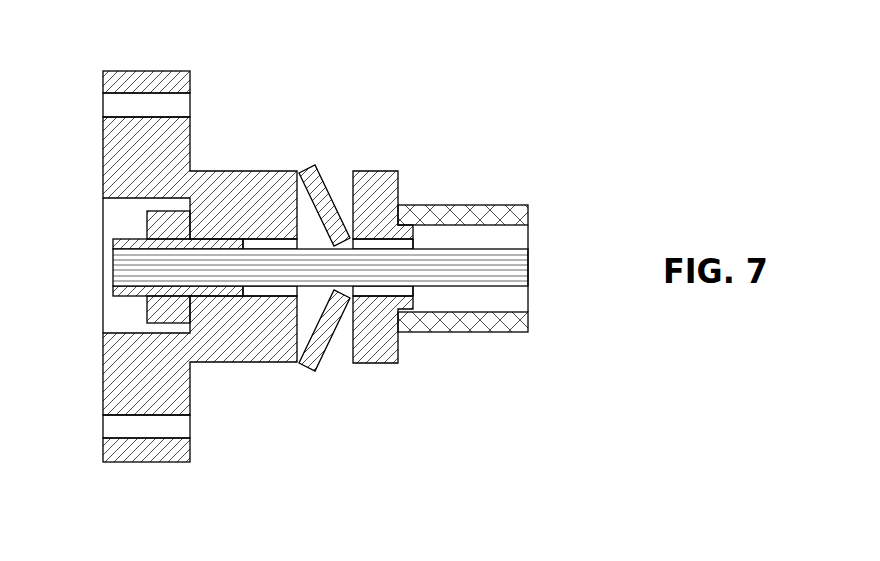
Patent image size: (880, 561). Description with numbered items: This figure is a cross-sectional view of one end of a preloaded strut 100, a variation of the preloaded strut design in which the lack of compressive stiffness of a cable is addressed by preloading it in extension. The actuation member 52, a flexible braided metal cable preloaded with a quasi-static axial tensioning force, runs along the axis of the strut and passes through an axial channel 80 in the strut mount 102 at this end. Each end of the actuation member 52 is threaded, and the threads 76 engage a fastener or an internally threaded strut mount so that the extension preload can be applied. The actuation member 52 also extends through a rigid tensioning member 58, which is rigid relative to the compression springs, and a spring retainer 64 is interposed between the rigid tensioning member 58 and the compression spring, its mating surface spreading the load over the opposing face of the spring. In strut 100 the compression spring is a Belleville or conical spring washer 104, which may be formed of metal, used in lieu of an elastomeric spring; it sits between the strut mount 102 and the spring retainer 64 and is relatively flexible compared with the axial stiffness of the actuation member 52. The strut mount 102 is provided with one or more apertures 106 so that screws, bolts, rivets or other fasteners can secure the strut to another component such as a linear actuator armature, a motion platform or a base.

The strut 100 is at (276, 257).
The strut mount 102 is at (263, 171).
The Belleville or conical spring washer 104 is at (316, 370).
The apertures 106 is at (113, 117).
The actuation member 52 is at (458, 249).
The rigid tensioning member 58 is at (512, 333).
The spring retainer 64 is at (382, 171).
The threads 76 is at (133, 238).
The axial channel 80 is at (103, 263).